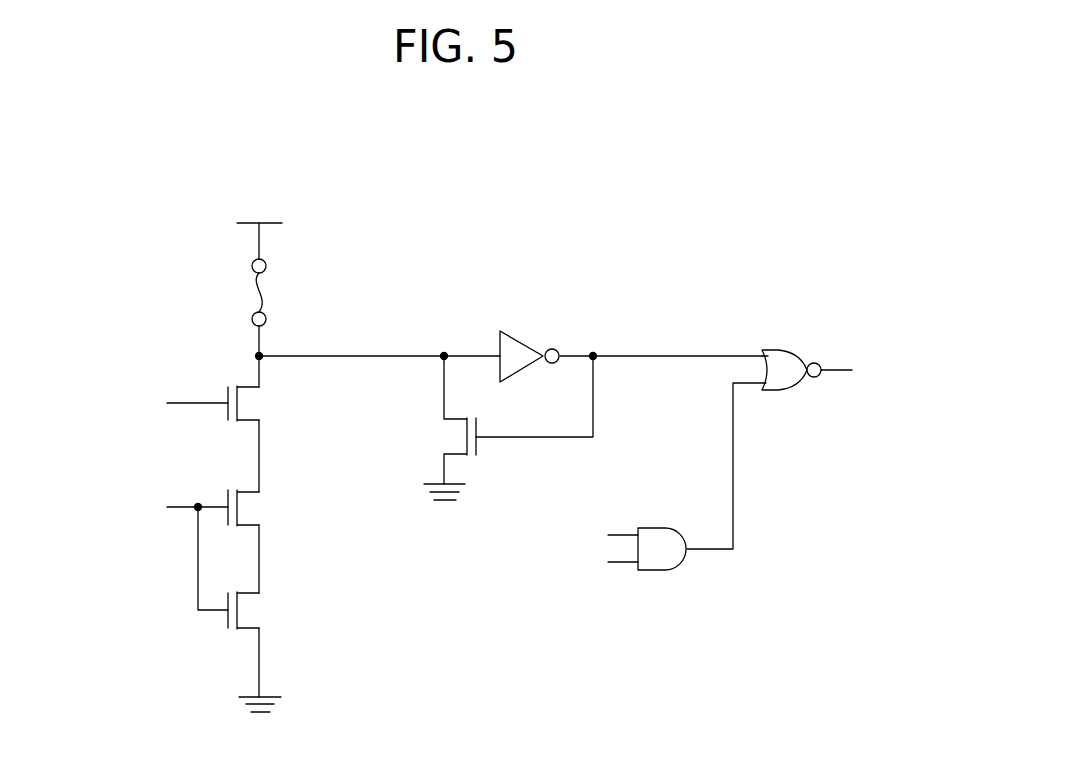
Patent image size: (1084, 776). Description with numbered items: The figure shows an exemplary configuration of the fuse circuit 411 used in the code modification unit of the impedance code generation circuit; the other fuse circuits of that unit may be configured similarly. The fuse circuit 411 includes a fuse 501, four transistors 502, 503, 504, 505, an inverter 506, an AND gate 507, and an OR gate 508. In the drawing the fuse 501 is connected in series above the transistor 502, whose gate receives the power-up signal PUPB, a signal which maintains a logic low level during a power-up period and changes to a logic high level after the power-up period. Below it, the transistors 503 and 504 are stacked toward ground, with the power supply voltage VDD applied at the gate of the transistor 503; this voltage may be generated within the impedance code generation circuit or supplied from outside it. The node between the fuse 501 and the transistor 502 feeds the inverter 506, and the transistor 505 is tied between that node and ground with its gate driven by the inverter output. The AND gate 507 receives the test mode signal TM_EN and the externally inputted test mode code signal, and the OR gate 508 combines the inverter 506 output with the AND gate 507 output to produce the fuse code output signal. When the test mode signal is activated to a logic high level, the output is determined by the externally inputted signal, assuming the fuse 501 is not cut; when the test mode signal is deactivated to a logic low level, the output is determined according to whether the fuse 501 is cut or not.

The fuse circuit 411 is at (595, 257).
The fuse 501 is at (266, 291).
The transistor 502 is at (266, 405).
The transistor 503 is at (266, 509).
The transistor 504 is at (266, 612).
The transistor 505 is at (445, 435).
The inverter 506 is at (531, 330).
The AND gate 507 is at (663, 578).
The OR gate 508 is at (781, 345).